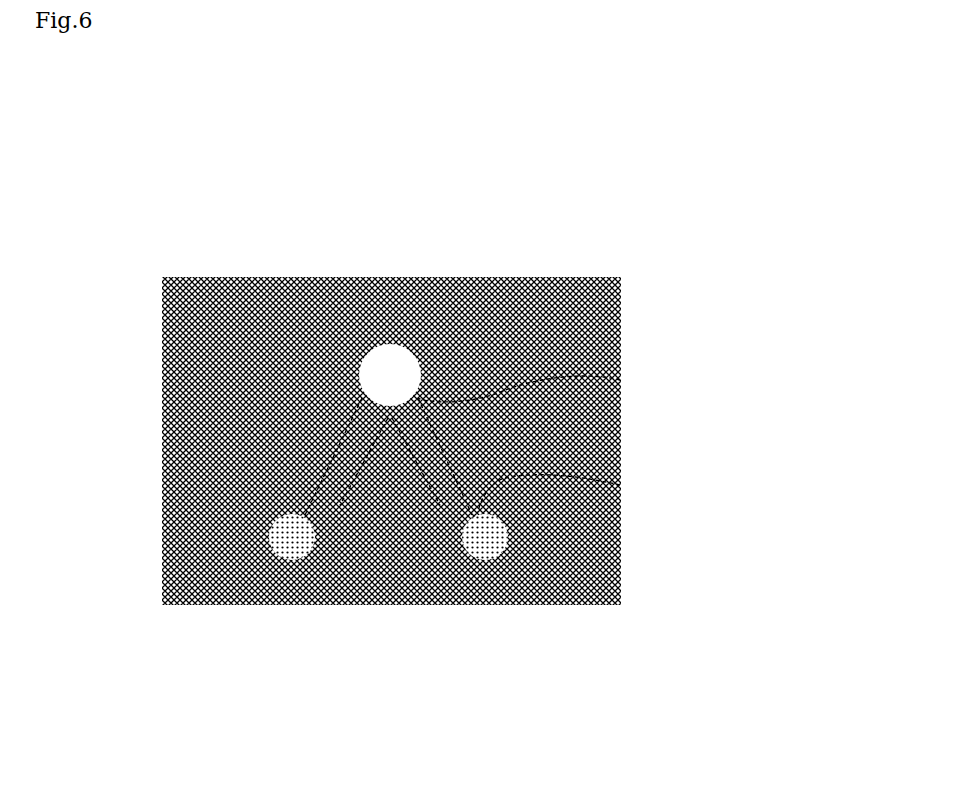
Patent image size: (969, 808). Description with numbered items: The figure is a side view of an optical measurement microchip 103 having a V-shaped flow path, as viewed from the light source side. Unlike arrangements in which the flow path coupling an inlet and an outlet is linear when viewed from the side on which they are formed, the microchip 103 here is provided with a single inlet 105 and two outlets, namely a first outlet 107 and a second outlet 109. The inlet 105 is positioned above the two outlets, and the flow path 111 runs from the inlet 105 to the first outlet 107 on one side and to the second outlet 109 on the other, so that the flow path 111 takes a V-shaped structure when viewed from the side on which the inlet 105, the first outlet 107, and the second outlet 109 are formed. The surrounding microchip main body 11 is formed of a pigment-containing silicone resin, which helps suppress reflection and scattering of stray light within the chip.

The microchip 103 is at (530, 182).
The inlet 105 is at (390, 378).
The first outlet 107 is at (302, 560).
The second outlet 109 is at (467, 560).
The microchip main body 11 is at (620, 380).
The flow path 111 is at (620, 485).